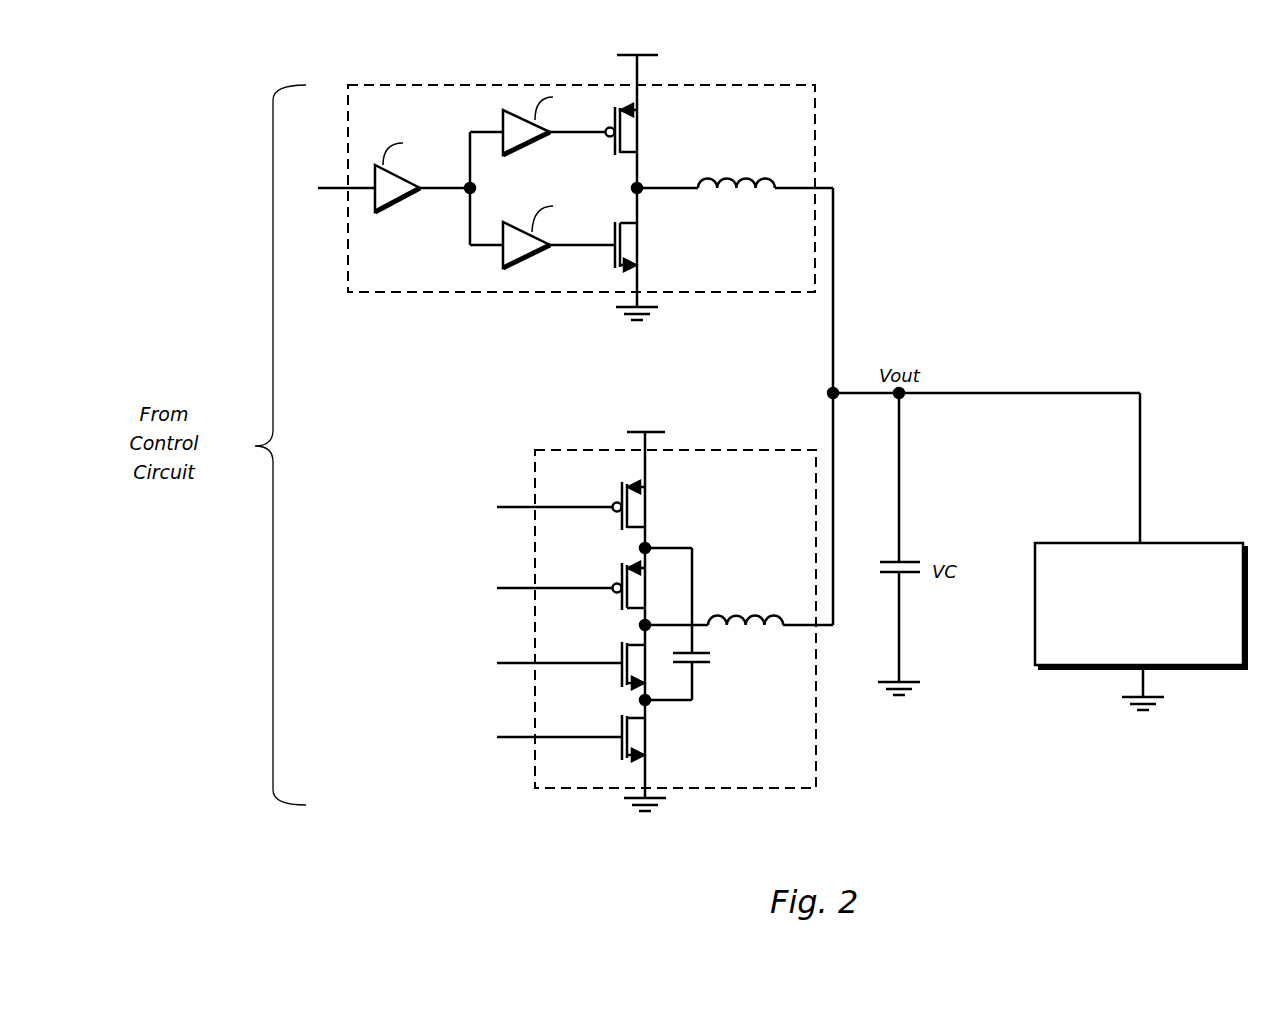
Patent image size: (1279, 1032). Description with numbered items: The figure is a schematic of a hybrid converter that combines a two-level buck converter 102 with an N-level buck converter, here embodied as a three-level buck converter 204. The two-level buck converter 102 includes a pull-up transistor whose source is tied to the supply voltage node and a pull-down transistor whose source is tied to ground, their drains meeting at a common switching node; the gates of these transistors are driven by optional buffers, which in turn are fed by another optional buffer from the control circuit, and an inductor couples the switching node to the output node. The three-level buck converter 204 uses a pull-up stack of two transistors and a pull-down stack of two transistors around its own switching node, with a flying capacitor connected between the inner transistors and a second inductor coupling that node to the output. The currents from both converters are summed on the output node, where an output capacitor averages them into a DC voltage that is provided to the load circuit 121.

The two-level buck converter 102 is at (815, 85).
The three-level buck converter 204 is at (535, 450).
The load circuit 121 is at (1141, 626).